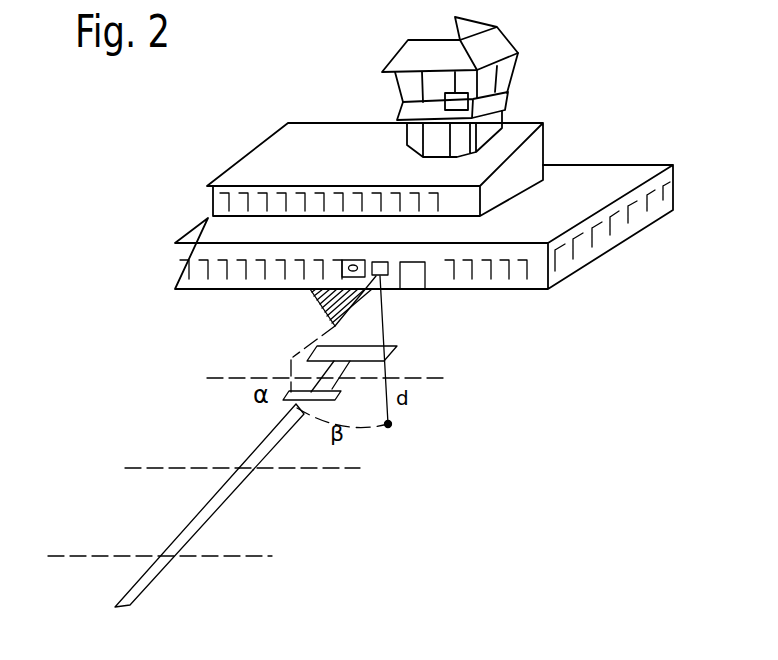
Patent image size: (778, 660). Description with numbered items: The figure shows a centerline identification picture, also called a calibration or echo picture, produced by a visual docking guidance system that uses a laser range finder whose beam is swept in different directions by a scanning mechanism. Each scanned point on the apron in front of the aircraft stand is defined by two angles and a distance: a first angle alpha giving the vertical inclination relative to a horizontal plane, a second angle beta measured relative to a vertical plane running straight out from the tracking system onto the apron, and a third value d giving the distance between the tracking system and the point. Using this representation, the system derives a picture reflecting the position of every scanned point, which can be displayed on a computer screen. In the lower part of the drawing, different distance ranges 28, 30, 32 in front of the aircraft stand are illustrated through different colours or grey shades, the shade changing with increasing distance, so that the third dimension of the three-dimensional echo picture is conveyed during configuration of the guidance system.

The distance range 28 is at (243, 353).
The distance range 30 is at (193, 432).
The distance range 32 is at (137, 517).